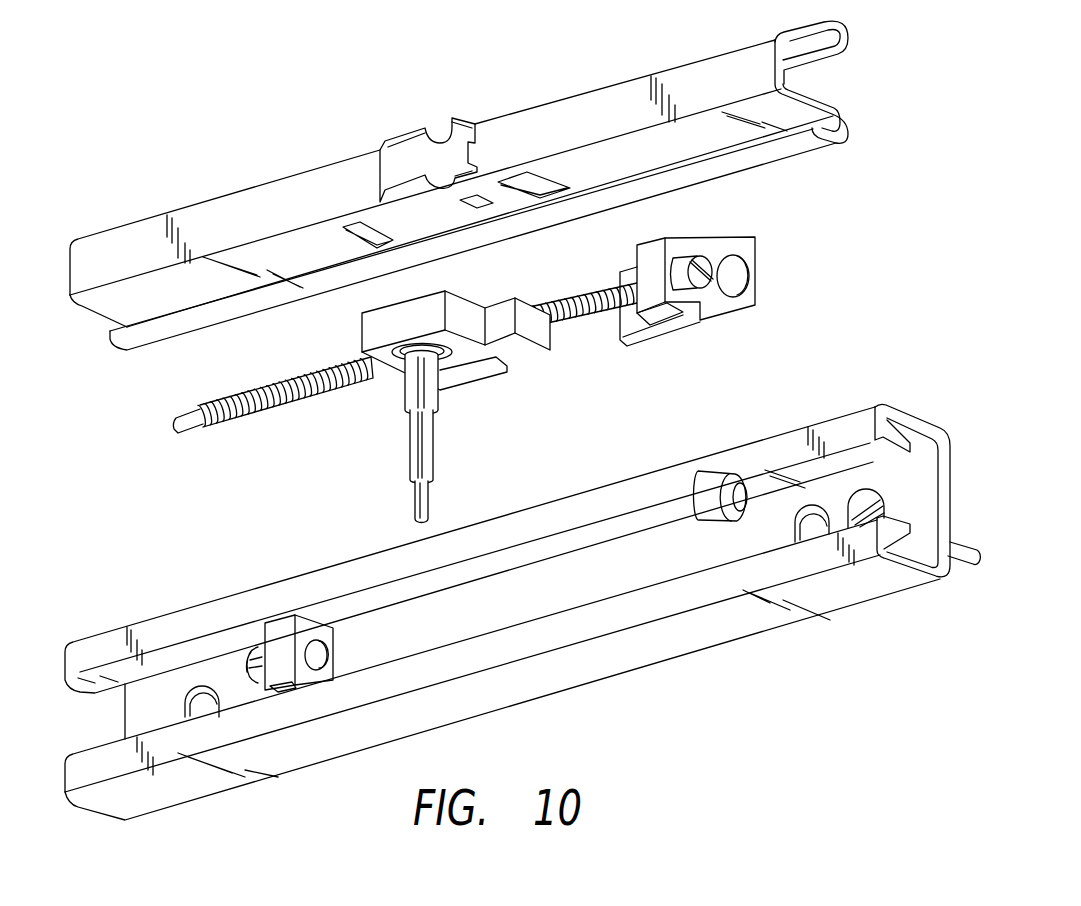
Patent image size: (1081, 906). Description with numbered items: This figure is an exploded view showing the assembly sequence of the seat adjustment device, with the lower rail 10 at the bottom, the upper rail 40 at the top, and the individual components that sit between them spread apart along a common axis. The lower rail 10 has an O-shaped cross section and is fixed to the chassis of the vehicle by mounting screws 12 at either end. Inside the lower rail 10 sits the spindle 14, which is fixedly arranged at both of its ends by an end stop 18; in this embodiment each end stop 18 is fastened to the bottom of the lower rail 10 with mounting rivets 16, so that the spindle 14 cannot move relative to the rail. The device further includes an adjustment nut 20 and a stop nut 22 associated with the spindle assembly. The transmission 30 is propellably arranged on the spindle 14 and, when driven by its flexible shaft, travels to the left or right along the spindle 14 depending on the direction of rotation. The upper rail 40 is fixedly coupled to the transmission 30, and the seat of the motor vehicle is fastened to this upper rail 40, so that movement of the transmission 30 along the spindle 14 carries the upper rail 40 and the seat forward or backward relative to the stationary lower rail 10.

The lower rail 10 is at (628, 674).
The mounting screw 12 is at (975, 538).
The spindle 14 is at (213, 425).
The mounting rivet 16 is at (700, 480).
The end stop 18 is at (760, 300).
The adjustment nut 20 is at (685, 258).
The stop nut 22 is at (240, 650).
The transmission 30 is at (512, 360).
The upper rail 40 is at (107, 235).